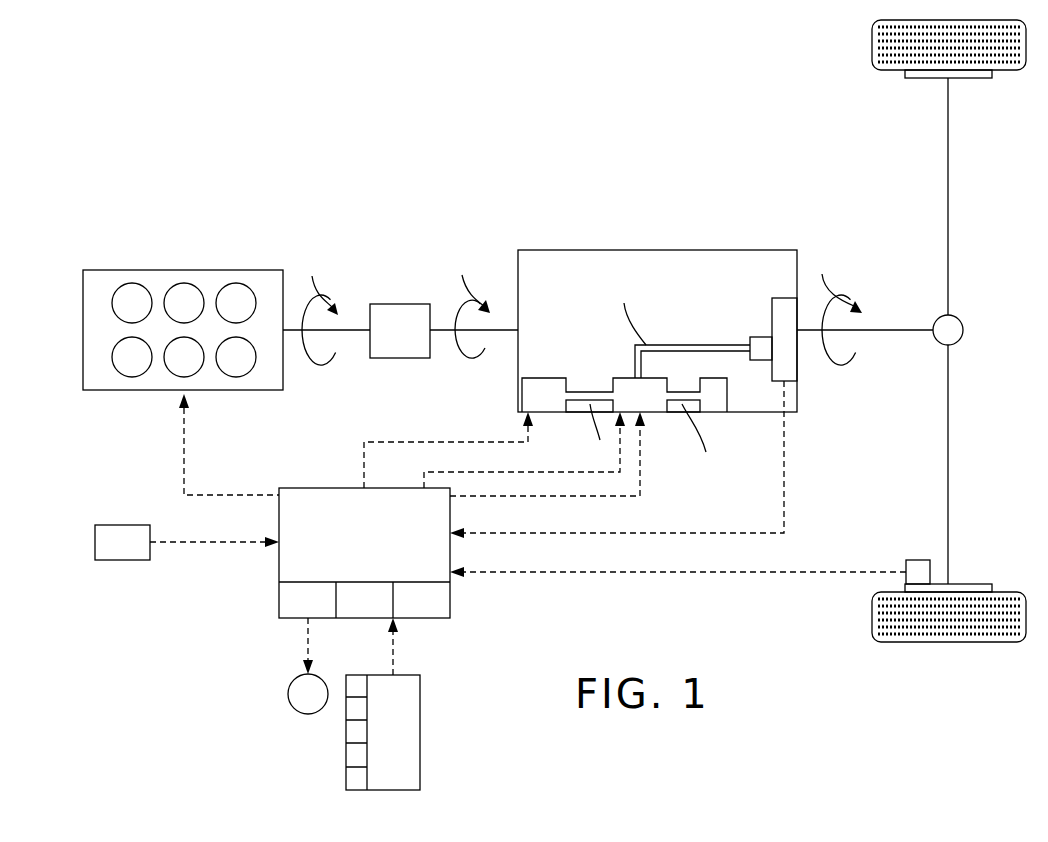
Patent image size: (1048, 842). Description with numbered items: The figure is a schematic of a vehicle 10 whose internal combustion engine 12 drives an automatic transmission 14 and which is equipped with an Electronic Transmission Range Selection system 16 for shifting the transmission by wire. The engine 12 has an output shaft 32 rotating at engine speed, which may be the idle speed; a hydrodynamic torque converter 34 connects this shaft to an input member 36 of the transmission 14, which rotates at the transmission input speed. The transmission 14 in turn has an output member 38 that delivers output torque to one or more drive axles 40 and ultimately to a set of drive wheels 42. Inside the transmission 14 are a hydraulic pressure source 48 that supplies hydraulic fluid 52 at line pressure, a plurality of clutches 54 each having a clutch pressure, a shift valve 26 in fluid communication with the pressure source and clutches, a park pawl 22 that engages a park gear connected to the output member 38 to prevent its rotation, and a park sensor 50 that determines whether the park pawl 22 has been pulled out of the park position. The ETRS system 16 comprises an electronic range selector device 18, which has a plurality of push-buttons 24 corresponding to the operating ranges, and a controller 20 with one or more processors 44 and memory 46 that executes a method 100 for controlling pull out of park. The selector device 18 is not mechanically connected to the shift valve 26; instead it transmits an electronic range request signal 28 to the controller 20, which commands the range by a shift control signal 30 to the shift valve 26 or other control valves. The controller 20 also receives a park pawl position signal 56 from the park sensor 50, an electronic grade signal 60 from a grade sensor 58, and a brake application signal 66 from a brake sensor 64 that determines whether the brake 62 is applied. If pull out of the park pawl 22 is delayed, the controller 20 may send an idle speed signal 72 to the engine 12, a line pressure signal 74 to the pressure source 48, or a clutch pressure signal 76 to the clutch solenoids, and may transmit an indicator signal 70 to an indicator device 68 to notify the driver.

The vehicle 10 is at (452, 148).
The internal combustion engine 12 is at (183, 270).
The automatic transmission 14 is at (657, 331).
The Electronic Transmission Range Selection (ETRS) system 16 is at (186, 634).
The electronic range selector device 18 is at (421, 730).
The controller 20 is at (364, 553).
The park pawl 22 is at (786, 347).
The push-buttons 24 is at (355, 778).
The shift valve 26 is at (636, 405).
The electronic range request signal 28 is at (395, 650).
The shift control signal 30 is at (545, 496).
The output shaft 32 is at (357, 332).
The hydrodynamic torque converter 34 is at (400, 331).
The input member 36 is at (508, 332).
The output member 38 is at (884, 328).
The drive axles 40 is at (950, 212).
The drive wheels 42 is at (874, 45).
The processors 44 is at (366, 600).
The memory 46 is at (422, 600).
The hydraulic pressure source 48 is at (545, 385).
The park sensor 50 is at (786, 370).
The hydraulic fluid 52 is at (684, 394).
The clutches 54 is at (760, 345).
The park pawl position signal 56 is at (784, 520).
The grade sensor 58 is at (122, 542).
The electronic grade signal 60 is at (205, 542).
The brake 62 is at (965, 584).
The brake sensor 64 is at (918, 560).
The brake application signal 66 is at (665, 572).
The indicator device 68 is at (289, 694).
The indicator signal 70 is at (305, 640).
The idle speed signal 72 is at (184, 455).
The line pressure signal 74 is at (428, 442).
The clutch pressure signal 76 is at (497, 472).
The method 100 is at (309, 600).